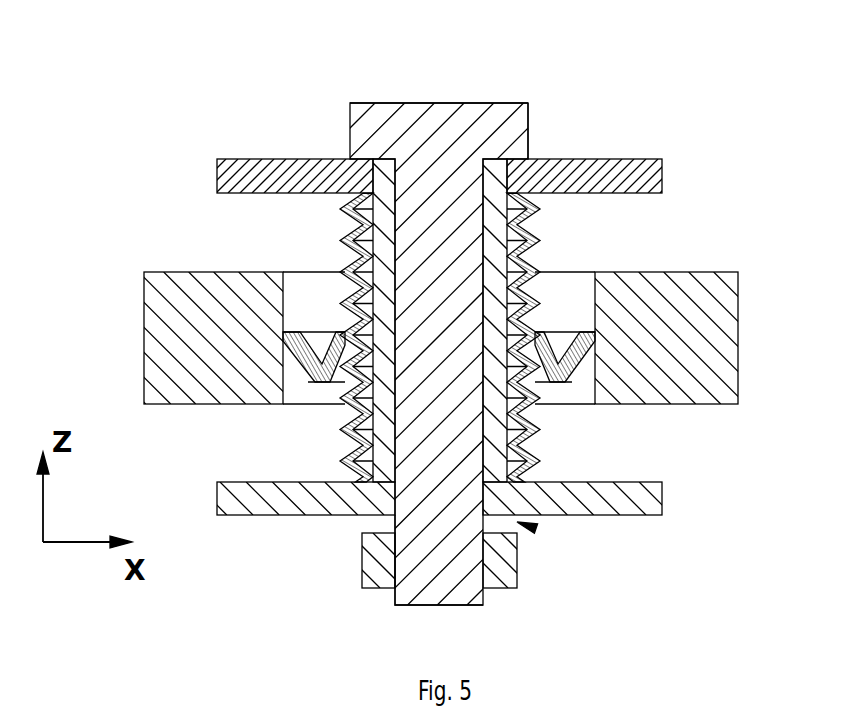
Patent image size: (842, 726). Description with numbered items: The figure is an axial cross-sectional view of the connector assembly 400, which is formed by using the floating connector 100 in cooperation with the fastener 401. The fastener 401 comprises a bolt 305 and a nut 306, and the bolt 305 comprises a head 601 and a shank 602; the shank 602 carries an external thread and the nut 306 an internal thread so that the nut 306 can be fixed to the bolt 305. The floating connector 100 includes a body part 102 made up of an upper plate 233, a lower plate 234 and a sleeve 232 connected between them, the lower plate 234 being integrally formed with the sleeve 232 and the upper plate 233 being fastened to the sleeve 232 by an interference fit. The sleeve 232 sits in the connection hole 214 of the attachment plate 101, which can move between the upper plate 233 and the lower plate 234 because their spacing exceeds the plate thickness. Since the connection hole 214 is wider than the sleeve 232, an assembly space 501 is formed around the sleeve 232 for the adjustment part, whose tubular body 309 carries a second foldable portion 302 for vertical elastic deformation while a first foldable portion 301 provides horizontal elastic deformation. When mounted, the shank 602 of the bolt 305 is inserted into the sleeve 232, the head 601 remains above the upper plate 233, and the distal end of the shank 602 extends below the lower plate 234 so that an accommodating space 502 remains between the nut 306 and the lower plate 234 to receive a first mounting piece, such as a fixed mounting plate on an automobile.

The connector assembly 400 is at (421, 317).
The body part 102 is at (283, 168).
The head 601 is at (383, 112).
The bolt 305 is at (455, 110).
The fastener 401 is at (527, 122).
The upper plate 233 is at (637, 160).
The floating connector 100 is at (210, 300).
The tubular body 309 is at (345, 208).
The sleeve 232 is at (495, 252).
The connection hole 214 is at (568, 278).
The attachment plate 101 is at (736, 355).
The first foldable portion 301 is at (318, 382).
The assembly space 501 is at (577, 392).
The second foldable portion 302 is at (543, 430).
The shank 602 is at (407, 502).
The lower plate 234 is at (660, 497).
The nut 306 is at (363, 552).
The accommodating space 502 is at (540, 528).